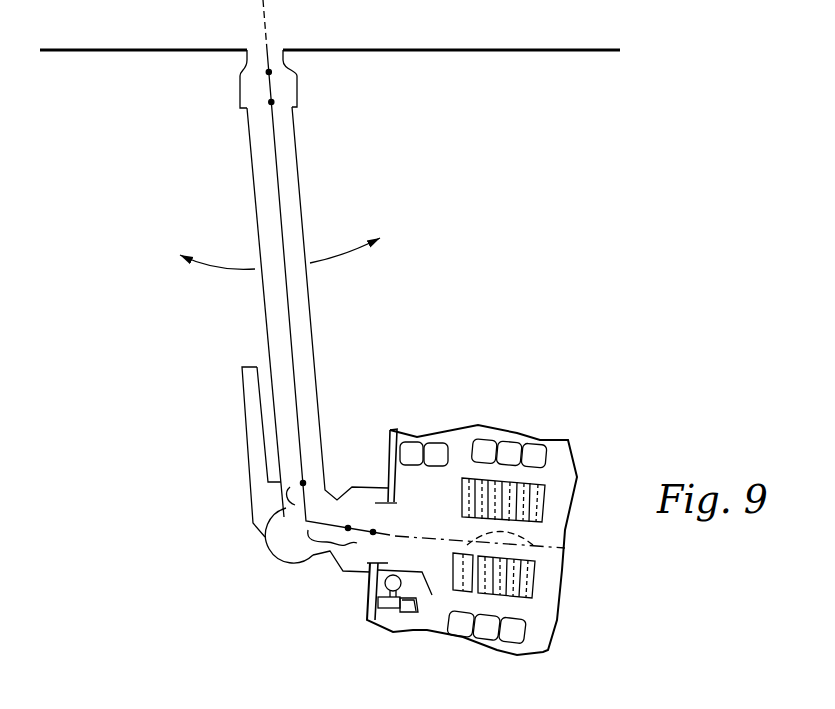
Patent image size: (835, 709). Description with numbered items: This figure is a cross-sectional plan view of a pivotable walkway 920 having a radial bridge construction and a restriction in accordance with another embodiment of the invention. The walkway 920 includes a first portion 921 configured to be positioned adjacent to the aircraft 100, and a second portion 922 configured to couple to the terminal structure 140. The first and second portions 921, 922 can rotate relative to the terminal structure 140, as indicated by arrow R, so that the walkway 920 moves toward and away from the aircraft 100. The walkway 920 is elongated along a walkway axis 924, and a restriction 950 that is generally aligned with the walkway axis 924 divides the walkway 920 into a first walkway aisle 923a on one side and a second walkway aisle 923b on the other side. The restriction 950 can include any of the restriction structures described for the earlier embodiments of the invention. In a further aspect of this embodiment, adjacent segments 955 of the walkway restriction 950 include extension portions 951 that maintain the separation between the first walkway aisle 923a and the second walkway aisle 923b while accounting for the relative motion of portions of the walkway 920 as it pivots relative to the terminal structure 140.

The aircraft 100 is at (550, 428).
The terminal structure 140 is at (407, 52).
The walkway 920 is at (380, 192).
The first portion 921 is at (362, 480).
The second portion 922 is at (220, 128).
The first walkway aisle 923a is at (262, 200).
The second walkway aisle 923b is at (292, 160).
The walkway axis 924 is at (258, 18).
The restriction 950 is at (293, 378).
The extension portions 951 is at (263, 545).
The adjacent segments 955 is at (282, 322).
The arrow R is at (357, 256).